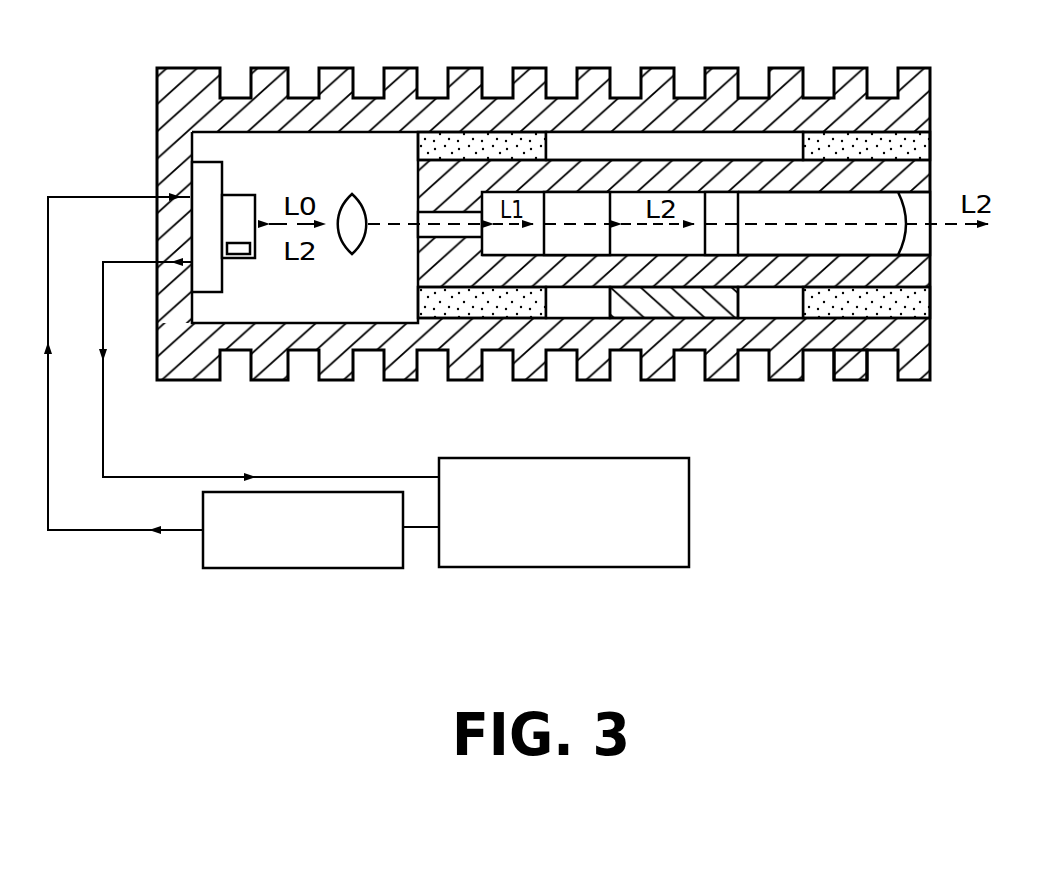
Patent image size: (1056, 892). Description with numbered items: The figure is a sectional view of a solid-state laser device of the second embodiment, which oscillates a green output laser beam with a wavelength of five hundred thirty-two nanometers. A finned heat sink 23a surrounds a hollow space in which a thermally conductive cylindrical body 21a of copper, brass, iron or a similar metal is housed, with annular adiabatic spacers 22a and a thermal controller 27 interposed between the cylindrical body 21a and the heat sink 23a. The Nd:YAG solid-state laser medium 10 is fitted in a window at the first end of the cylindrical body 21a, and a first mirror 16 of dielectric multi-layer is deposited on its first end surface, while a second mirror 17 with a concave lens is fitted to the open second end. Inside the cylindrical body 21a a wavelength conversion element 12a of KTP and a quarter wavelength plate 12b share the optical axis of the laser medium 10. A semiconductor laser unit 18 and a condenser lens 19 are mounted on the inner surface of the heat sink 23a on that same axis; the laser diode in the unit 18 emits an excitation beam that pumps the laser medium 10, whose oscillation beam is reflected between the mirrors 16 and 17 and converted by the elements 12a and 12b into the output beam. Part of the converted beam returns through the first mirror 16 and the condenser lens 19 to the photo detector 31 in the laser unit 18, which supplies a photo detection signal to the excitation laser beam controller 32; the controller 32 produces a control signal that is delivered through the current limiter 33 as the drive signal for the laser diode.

The solid-state laser medium 10 is at (455, 212).
The wavelength conversion element 12a is at (582, 207).
The quarter wavelength plate 12b is at (720, 205).
The first mirror 16 is at (418, 224).
The second mirror 17 is at (917, 202).
The semiconductor laser unit 18 is at (205, 162).
The condenser lens 19 is at (350, 195).
The cylindrical body 21a is at (917, 263).
The annular adiabatic spacers 22a is at (915, 300).
The heat sink 23a is at (847, 363).
The thermal controller 27 is at (642, 304).
The photo detector 31 is at (258, 250).
The excitation laser beam controller 32 is at (570, 568).
The current limiter 33 is at (297, 568).